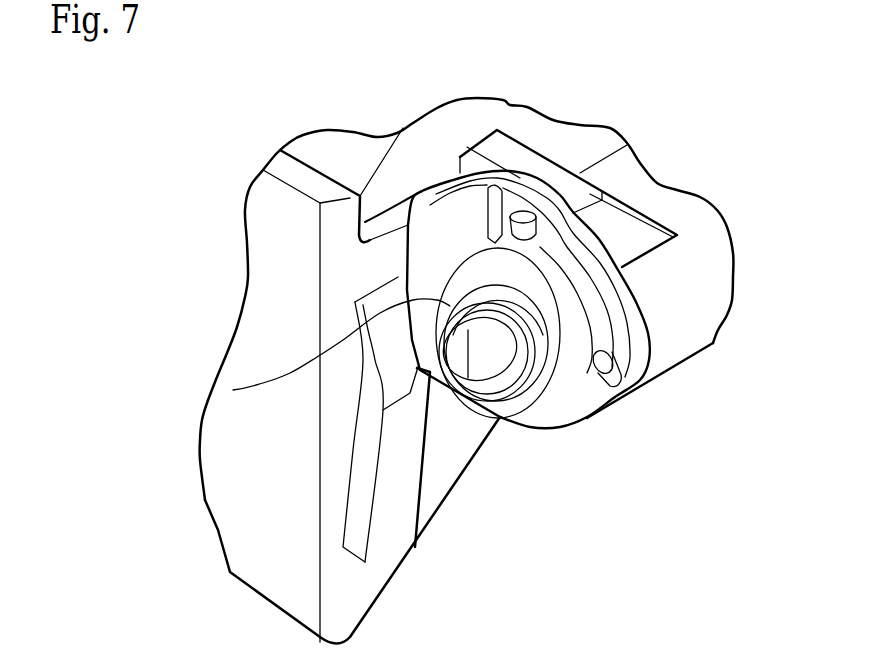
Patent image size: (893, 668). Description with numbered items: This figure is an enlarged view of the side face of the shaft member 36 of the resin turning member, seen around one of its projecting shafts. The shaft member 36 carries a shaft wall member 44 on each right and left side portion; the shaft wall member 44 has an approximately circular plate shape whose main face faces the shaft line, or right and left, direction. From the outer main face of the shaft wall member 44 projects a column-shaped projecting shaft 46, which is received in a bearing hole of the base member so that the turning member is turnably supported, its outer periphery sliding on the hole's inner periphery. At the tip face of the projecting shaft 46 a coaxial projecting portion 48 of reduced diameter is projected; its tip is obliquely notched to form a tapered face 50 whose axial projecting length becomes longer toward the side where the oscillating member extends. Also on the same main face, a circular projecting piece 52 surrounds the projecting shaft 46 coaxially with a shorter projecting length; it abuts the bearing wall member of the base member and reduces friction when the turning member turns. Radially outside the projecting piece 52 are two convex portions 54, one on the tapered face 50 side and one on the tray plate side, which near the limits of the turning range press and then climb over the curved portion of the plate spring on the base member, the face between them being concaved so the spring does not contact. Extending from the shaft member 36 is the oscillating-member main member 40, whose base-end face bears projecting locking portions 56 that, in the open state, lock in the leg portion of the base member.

The shaft member 36 is at (690, 354).
The oscillating-member main member 40 is at (277, 202).
The shaft wall member 44 is at (445, 213).
The projecting shaft 46 is at (533, 363).
The projecting portion 48 is at (233, 390).
The tapered face 50 is at (483, 357).
The projecting piece 52 is at (560, 397).
The convex portions 54 is at (540, 247).
The locking portions 56 is at (393, 525).